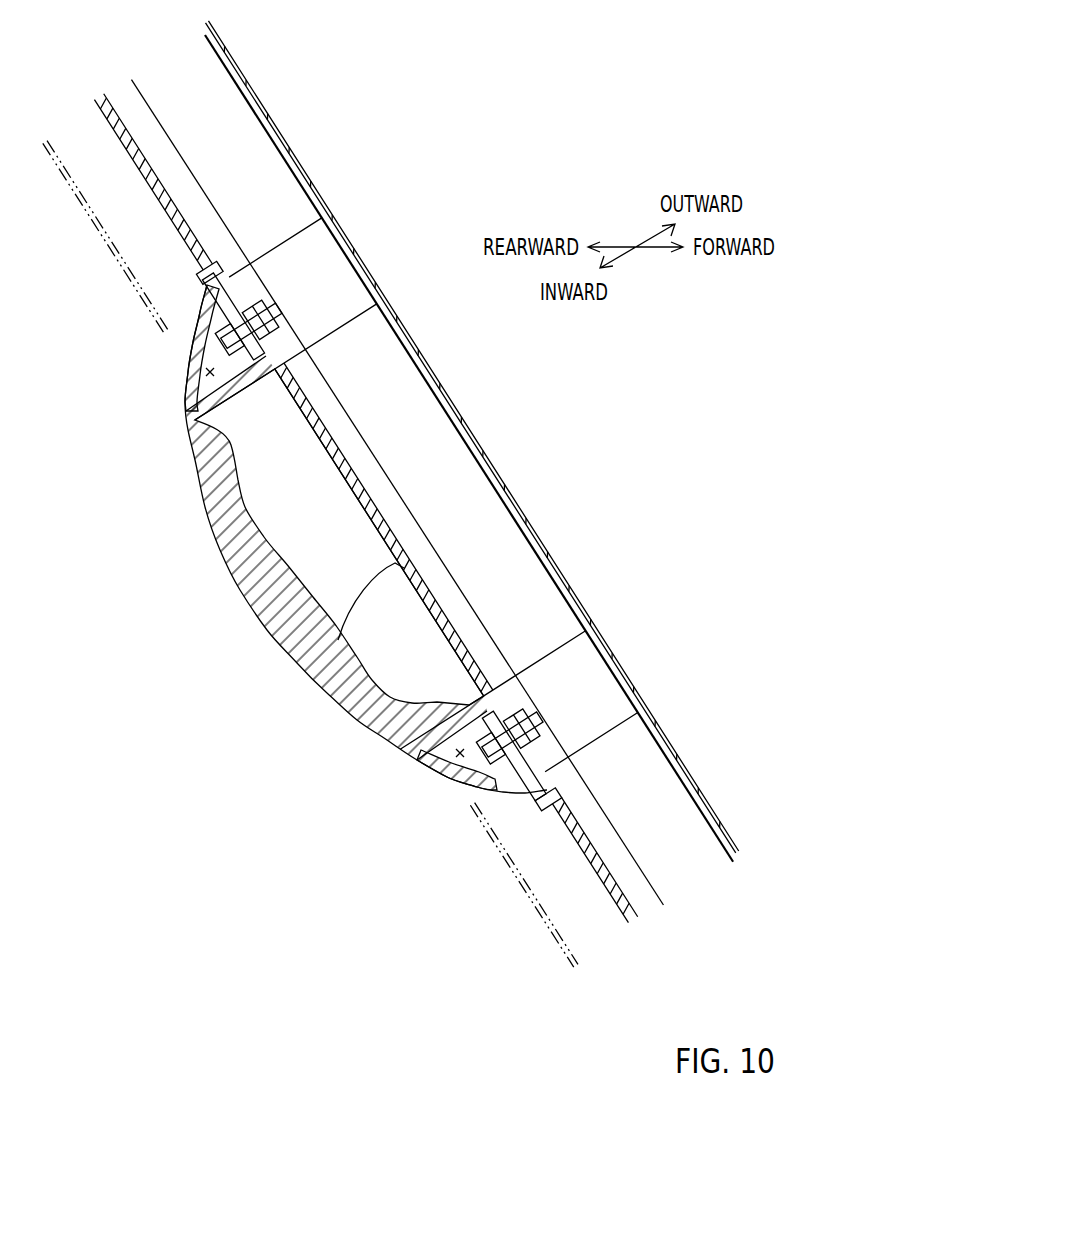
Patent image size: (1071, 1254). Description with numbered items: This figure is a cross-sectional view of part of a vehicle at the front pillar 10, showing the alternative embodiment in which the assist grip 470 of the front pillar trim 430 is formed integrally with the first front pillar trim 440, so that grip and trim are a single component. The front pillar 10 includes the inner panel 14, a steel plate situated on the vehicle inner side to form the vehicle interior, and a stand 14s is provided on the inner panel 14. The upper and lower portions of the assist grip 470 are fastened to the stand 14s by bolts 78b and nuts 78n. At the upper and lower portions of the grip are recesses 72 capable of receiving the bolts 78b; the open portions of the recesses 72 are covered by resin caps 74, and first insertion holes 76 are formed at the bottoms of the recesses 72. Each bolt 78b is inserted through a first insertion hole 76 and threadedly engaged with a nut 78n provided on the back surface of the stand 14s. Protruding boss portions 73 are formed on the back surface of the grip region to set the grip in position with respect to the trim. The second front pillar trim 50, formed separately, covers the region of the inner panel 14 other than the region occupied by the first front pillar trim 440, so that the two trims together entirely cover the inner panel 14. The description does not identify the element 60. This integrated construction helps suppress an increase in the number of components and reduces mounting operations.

The front pillar 10 is at (471, 450).
The inner panel 14 is at (698, 797).
The stand 14s is at (470, 478).
The rail inner member 60 is at (375, 505).
The front pillar trim 430 is at (314, 554).
The first front pillar trim 440 is at (365, 539).
The assist grip 470 is at (255, 587).
The second front pillar trim 50 is at (585, 882).
The boss portion 73 is at (257, 306).
The nut 78n is at (300, 335).
The bolt 78b is at (230, 327).
The recess 72 is at (208, 373).
The resin cap 74 is at (187, 378).
The first insertion hole 76 is at (191, 348).